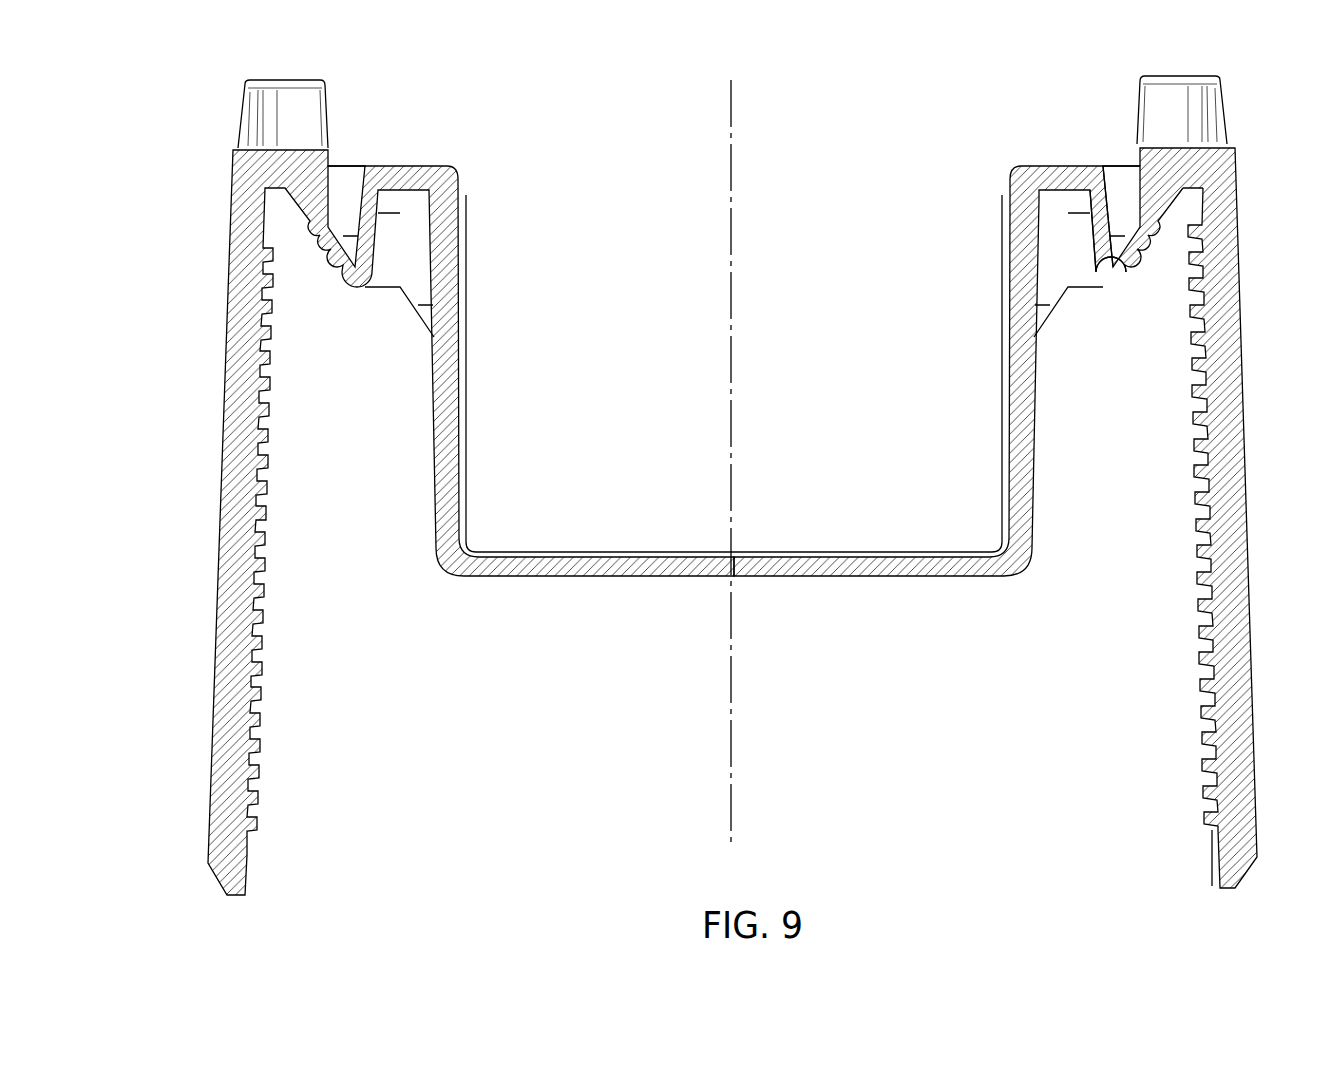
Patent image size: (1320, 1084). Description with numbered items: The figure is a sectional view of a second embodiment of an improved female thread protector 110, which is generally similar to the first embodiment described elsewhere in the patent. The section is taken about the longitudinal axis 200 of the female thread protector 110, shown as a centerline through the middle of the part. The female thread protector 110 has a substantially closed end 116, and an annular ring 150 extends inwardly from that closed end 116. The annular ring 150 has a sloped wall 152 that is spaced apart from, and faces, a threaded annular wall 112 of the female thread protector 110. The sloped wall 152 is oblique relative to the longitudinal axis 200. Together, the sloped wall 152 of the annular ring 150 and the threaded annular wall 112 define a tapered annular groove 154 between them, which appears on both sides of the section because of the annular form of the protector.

The female thread protector 110 is at (696, 485).
The threaded annular wall 112 is at (1187, 327).
The substantially closed end 116 is at (1072, 161).
The annular ring 150 is at (1100, 253).
The sloped wall 152 is at (1138, 240).
The tapered annular groove 154 is at (1180, 207).
The longitudinal axis 200 is at (731, 92).